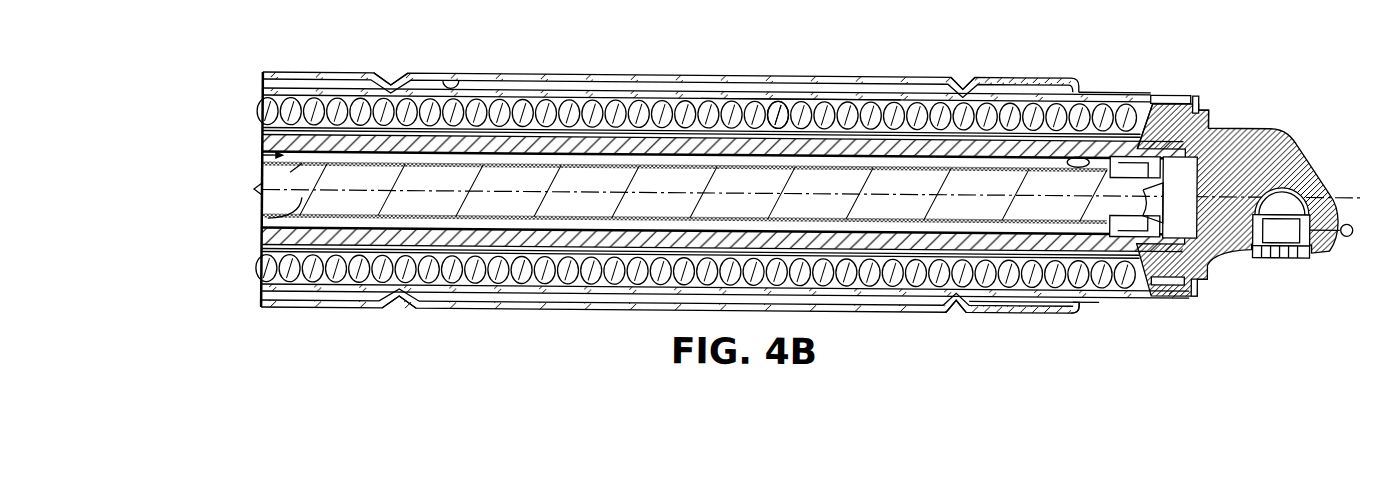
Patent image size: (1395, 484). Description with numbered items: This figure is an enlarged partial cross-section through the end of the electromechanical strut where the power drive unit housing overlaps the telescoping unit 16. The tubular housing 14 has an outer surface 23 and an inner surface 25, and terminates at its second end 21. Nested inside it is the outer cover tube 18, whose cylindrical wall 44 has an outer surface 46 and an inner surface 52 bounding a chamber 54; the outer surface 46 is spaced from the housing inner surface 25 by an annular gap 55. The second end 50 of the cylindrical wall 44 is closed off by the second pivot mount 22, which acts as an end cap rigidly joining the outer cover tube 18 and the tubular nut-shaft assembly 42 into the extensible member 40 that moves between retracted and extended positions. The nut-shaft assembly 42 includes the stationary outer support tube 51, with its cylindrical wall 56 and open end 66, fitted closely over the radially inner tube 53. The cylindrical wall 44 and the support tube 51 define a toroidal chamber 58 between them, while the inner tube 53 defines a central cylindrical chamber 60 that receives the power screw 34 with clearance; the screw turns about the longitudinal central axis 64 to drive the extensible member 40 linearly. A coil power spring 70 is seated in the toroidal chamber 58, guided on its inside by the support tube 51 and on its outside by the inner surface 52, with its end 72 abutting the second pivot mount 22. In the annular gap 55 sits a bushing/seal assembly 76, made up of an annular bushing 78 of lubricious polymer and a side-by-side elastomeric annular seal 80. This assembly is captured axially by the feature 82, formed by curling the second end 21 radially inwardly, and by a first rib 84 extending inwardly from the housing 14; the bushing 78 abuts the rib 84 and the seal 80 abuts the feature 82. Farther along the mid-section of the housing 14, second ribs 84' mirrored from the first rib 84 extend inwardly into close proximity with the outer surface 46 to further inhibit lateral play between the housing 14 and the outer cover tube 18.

The housing 14 is at (808, 69).
The telescoping unit 16 is at (1175, 60).
The outer cover tube 18 is at (643, 90).
The second end 21 is at (1092, 84).
The second pivot mount 22 is at (1320, 245).
The outer surface 23 is at (342, 72).
The inner surface 25 is at (452, 80).
The power screw 34 is at (467, 178).
The extensible member 40 is at (1216, 281).
The tubular nut-shaft assembly 42 is at (1182, 130).
The cylindrical wall 44 is at (323, 290).
The outer surface 46 is at (735, 84).
The second end 50 is at (1150, 88).
The outer support tube 51 is at (305, 103).
The inner surface 52 is at (910, 245).
The inner tube 53 is at (350, 140).
The chamber 54 is at (596, 270).
The annular gap 55 is at (545, 86).
The cylindrical wall 56 is at (588, 125).
The toroidal chamber 58 is at (270, 267).
The central cylindrical chamber 60 is at (260, 153).
The longitudinal central axis 64 is at (262, 220).
The open end 66 is at (1067, 127).
The power spring 70 is at (778, 105).
The end 72 is at (1133, 270).
The bushing/seal assembly 76 is at (1020, 310).
The annular bushing 78 is at (997, 298).
The annular seal 80 is at (1068, 303).
The feature 82 is at (1075, 80).
The first rib 84 is at (928, 202).
The second ribs 84' is at (419, 176).